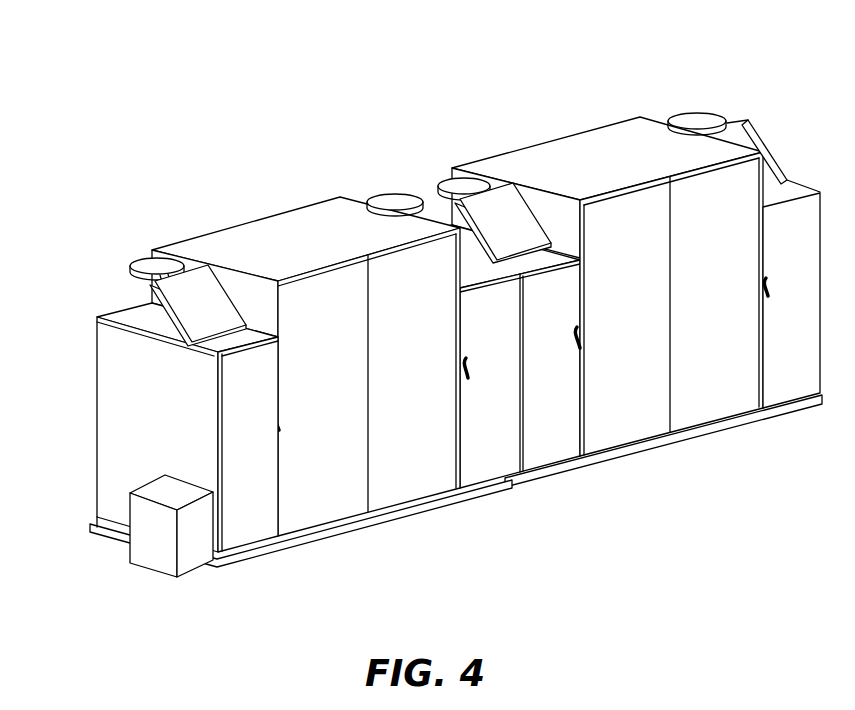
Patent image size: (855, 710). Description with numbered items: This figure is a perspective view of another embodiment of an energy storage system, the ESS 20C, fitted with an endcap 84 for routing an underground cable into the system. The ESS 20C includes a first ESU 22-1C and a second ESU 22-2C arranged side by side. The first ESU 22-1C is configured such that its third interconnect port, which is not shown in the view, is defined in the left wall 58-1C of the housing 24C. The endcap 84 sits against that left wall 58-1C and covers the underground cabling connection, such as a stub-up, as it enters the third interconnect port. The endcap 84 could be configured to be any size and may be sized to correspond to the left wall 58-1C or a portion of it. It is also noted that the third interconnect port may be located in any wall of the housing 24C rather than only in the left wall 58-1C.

The energy storage system 20C is at (299, 57).
The first energy storage unit 22-1C is at (276, 232).
The second energy storage unit 22-2C is at (606, 150).
The housing 24C is at (212, 242).
The left wall 58-1C is at (118, 391).
The endcap 84 is at (159, 548).